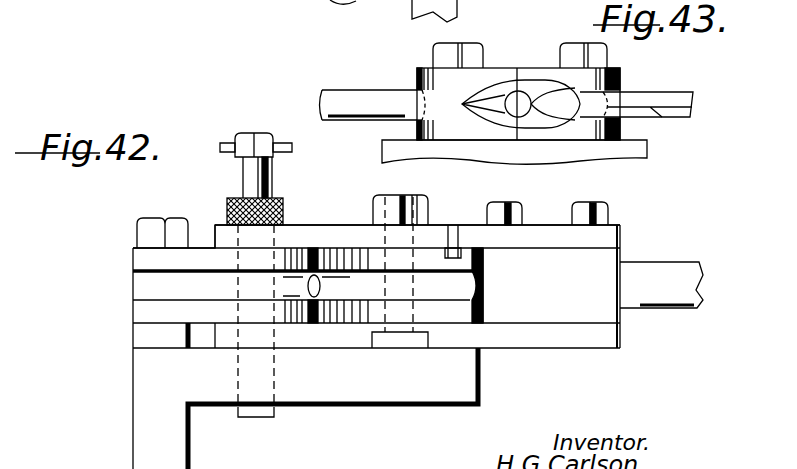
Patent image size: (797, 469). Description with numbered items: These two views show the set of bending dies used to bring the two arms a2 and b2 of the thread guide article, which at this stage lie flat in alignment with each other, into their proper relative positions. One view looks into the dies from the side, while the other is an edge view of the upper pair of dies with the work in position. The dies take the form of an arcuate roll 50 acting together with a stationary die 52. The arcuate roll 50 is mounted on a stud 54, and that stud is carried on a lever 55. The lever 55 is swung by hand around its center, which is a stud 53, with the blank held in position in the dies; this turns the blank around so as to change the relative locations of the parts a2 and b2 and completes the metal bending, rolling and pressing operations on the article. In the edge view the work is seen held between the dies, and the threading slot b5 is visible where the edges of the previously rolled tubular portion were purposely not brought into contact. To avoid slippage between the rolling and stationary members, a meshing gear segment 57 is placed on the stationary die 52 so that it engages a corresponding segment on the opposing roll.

In FIG. 42, the arcuate roll 50 is at (463, 290).
In FIG. 42, the stationary die 52 is at (178, 285).
In FIG. 43, the stationary die 52 is at (570, 133).
In FIG. 42, the stud 53 is at (268, 177).
In FIG. 42, the stud 54 is at (400, 193).
In FIG. 42, the lever 55 is at (602, 258).
In FIG. 43, the meshing gear segment 57 is at (612, 70).
In FIG. 43, the arm a2 is at (360, 86).
In FIG. 43, the arm b2 is at (684, 88).
In FIG. 43, the threading slot b5 is at (660, 110).